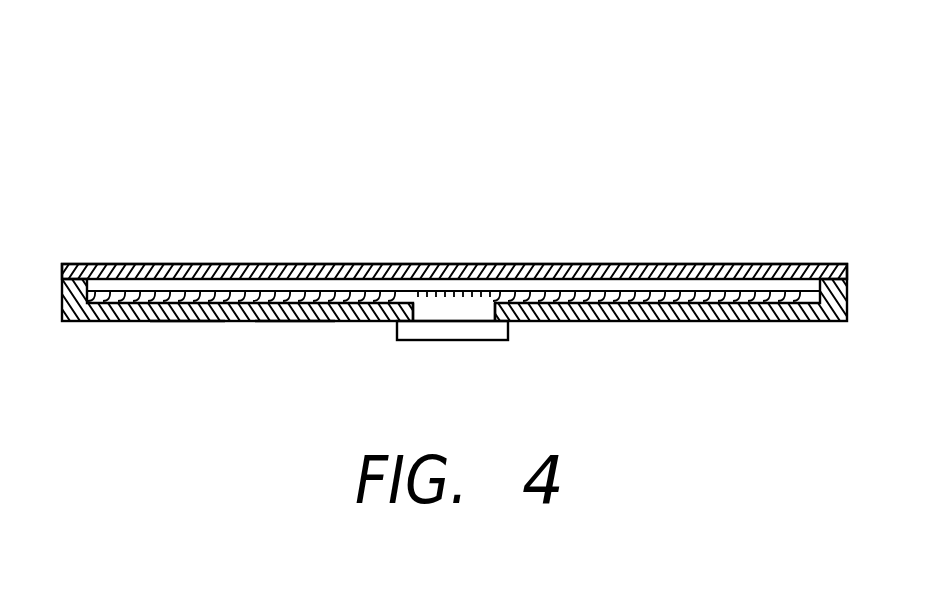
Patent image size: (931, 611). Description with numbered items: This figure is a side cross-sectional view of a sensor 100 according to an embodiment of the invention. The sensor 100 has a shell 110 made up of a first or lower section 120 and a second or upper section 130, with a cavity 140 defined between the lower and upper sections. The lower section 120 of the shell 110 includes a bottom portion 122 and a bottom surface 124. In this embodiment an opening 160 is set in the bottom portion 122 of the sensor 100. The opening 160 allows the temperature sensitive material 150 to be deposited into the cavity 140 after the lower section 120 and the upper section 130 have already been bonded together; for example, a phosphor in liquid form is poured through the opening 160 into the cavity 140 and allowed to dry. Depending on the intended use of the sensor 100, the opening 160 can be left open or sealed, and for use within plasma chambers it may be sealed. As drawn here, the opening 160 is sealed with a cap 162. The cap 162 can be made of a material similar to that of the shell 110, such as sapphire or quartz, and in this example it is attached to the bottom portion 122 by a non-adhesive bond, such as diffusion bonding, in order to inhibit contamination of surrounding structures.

The sensor 100 is at (170, 223).
The shell 110 is at (300, 265).
The lower section 120 is at (687, 325).
The bottom portion 122 is at (187, 322).
The bottom surface 124 is at (293, 323).
The upper section 130 is at (430, 272).
The cavity 140 is at (613, 286).
The temperature sensitive material 150 is at (708, 297).
The opening 160 is at (440, 312).
The cap 162 is at (494, 331).